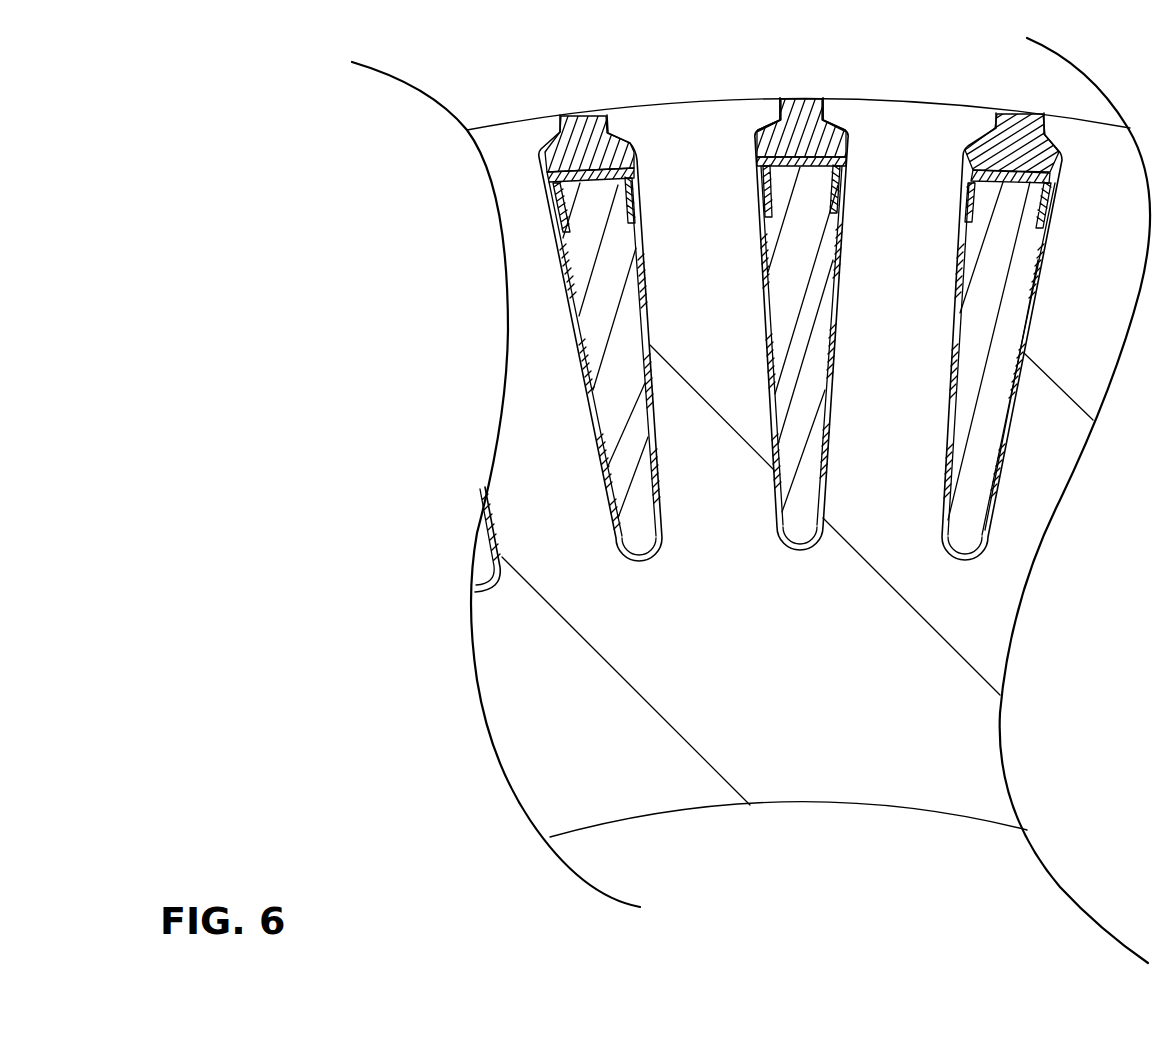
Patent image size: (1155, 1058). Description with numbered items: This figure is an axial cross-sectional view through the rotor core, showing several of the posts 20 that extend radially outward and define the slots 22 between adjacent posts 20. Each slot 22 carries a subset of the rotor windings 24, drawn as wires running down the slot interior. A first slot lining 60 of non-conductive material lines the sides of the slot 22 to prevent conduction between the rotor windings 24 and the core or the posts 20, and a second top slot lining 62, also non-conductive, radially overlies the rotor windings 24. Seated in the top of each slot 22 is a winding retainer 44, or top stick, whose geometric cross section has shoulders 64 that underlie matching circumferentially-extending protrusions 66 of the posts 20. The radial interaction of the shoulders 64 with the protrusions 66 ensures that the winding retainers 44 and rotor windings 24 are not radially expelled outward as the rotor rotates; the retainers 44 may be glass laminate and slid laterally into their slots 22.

The posts 20 is at (751, 487).
The slots 22 is at (957, 198).
The rotor windings 24 is at (982, 340).
The winding retainers 44 is at (1017, 130).
The first slot lining 60 is at (776, 301).
The second top slot lining 62 is at (1030, 177).
The shoulders 64 is at (823, 117).
The protrusions 66 is at (763, 143).